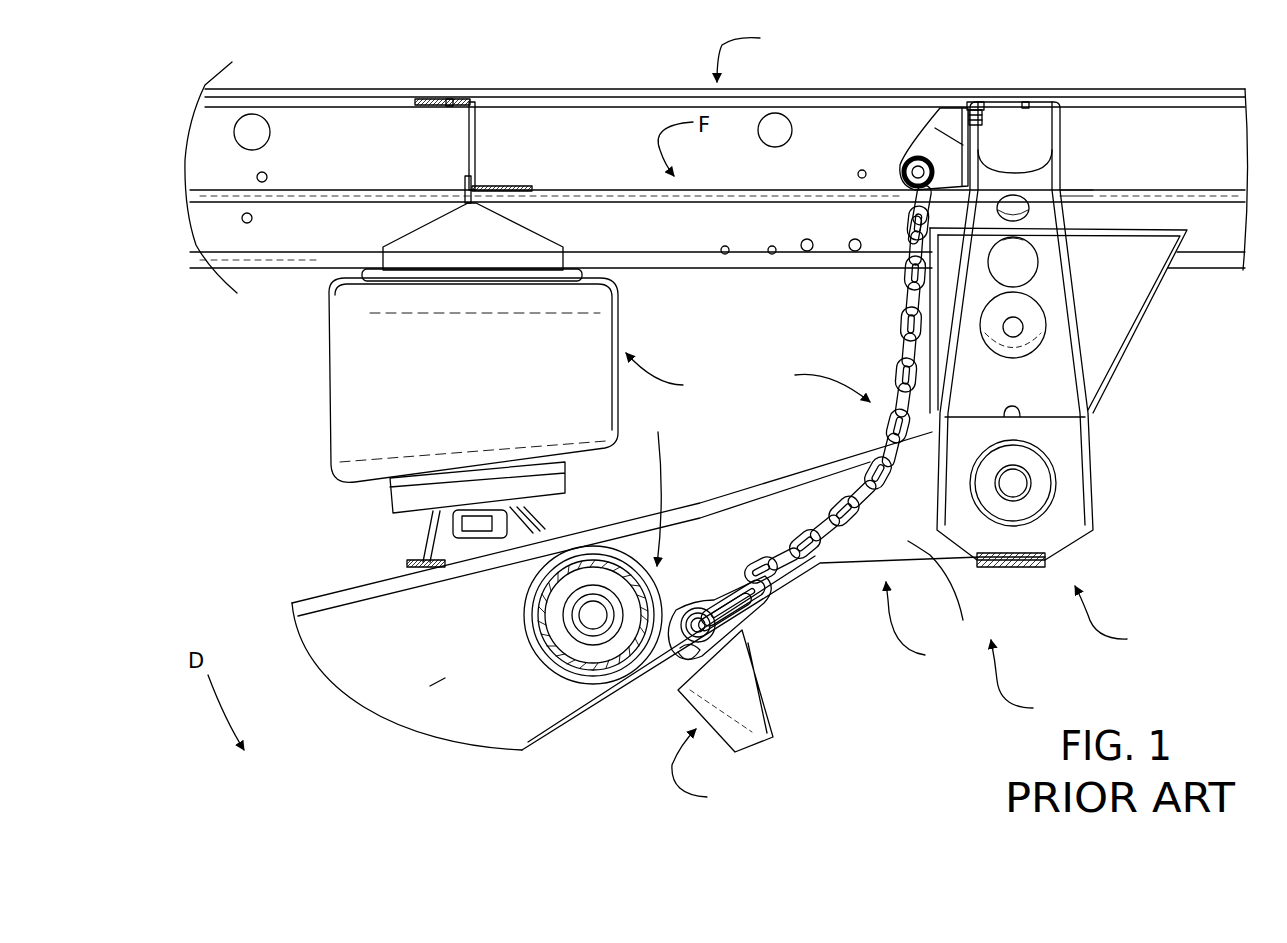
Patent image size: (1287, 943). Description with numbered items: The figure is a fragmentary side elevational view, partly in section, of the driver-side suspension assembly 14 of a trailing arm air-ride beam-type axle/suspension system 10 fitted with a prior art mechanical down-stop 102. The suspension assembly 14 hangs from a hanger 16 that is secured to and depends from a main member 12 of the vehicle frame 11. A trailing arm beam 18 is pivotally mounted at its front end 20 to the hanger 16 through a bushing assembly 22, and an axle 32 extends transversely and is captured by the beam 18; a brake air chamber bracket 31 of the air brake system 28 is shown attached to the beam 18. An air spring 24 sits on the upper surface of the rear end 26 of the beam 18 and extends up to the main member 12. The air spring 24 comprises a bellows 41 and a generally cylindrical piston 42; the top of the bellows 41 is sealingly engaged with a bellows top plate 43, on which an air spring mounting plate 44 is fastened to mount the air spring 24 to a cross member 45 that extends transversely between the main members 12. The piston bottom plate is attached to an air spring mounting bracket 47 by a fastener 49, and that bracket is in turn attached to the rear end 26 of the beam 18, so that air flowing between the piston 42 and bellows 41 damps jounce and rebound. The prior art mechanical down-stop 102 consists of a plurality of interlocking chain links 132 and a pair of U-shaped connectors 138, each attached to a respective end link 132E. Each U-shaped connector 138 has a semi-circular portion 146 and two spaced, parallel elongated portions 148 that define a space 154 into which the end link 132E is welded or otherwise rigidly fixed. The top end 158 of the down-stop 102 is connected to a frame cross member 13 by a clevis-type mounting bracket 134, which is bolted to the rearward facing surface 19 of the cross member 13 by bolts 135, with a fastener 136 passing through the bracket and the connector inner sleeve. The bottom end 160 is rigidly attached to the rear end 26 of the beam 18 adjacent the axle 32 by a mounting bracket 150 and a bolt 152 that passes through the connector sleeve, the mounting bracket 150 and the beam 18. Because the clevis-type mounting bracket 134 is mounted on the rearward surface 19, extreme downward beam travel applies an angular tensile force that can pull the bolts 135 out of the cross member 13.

The axle/suspension system 10 is at (1025, 680).
The frame 11 is at (753, 52).
The main member 12 is at (555, 118).
The cross member 13 is at (1062, 132).
The suspension assembly 14 is at (1115, 618).
The hanger 16 is at (1128, 270).
The trailing arm beam 18 is at (919, 624).
The rearward facing surface 19 is at (946, 128).
The front end 20 is at (942, 589).
The bushing assembly 22 is at (1048, 522).
The air spring 24 is at (668, 378).
The rear end 26 is at (608, 540).
The air brake system 28 is at (706, 768).
The brake air chamber bracket 31 is at (760, 747).
The axle 32 is at (547, 653).
The bellows 41 is at (350, 390).
The piston 42 is at (400, 497).
The bellows top plate 43 is at (367, 275).
The air spring mounting plate 44 is at (413, 250).
The cross member 45 is at (477, 130).
The air spring mounting bracket 47 is at (440, 533).
The fastener 49 is at (443, 680).
The prior art mechanical down-stop 102 is at (810, 383).
The chain links 132 is at (892, 342).
The end link 132E is at (907, 230).
The clevis-type mounting bracket 134 is at (933, 140).
The bolts 135 is at (984, 114).
The fastener 136 is at (903, 160).
The U-shaped connector 138 is at (884, 248).
The semi-circular portion 146 is at (657, 487).
The elongated portions 148 is at (912, 215).
The mounting bracket 150 is at (678, 653).
The bolt 152 is at (682, 650).
The space 154 is at (914, 192).
The top end 158 is at (889, 180).
The bottom end 160 is at (630, 490).